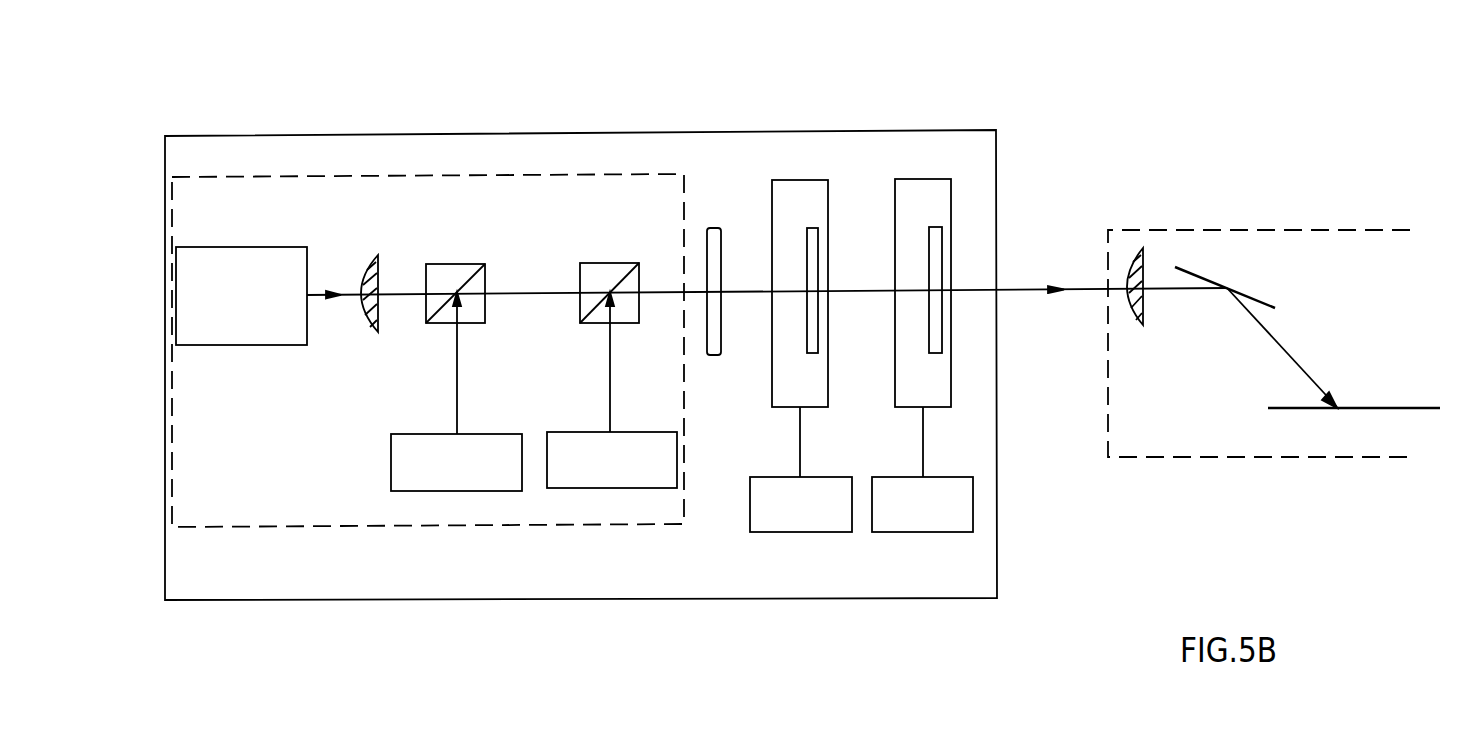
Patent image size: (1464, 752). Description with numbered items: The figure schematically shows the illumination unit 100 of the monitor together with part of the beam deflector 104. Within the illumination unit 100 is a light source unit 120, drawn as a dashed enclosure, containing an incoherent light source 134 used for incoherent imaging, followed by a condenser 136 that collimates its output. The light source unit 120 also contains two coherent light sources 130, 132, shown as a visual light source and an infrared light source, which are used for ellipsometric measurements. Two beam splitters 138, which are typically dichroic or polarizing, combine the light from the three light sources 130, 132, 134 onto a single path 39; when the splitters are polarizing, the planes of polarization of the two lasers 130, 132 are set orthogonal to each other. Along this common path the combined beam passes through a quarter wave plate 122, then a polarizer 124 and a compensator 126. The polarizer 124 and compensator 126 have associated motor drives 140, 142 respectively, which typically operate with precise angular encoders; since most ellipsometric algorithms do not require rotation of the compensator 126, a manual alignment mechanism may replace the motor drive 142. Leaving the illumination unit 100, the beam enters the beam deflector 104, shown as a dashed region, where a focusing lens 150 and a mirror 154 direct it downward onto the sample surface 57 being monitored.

The illumination unit 100 is at (313, 578).
The light source unit 120 is at (223, 528).
The incoherent light source 134 is at (255, 245).
The condenser 136 is at (370, 273).
The beam splitters 138 is at (457, 267).
The light beam 39 is at (665, 290).
The coherent light source 130 is at (487, 493).
The coherent light source 132 is at (650, 490).
The quarter wave plate 122 is at (717, 232).
The polarizer 124 is at (800, 183).
The compensator 126 is at (928, 182).
The motor drive 140 is at (825, 532).
The motor drive 142 is at (907, 532).
The beam deflector 104 is at (1345, 242).
The focusing lens 150 is at (1132, 270).
The mirror 154 is at (1253, 297).
The sample 57 is at (1387, 407).